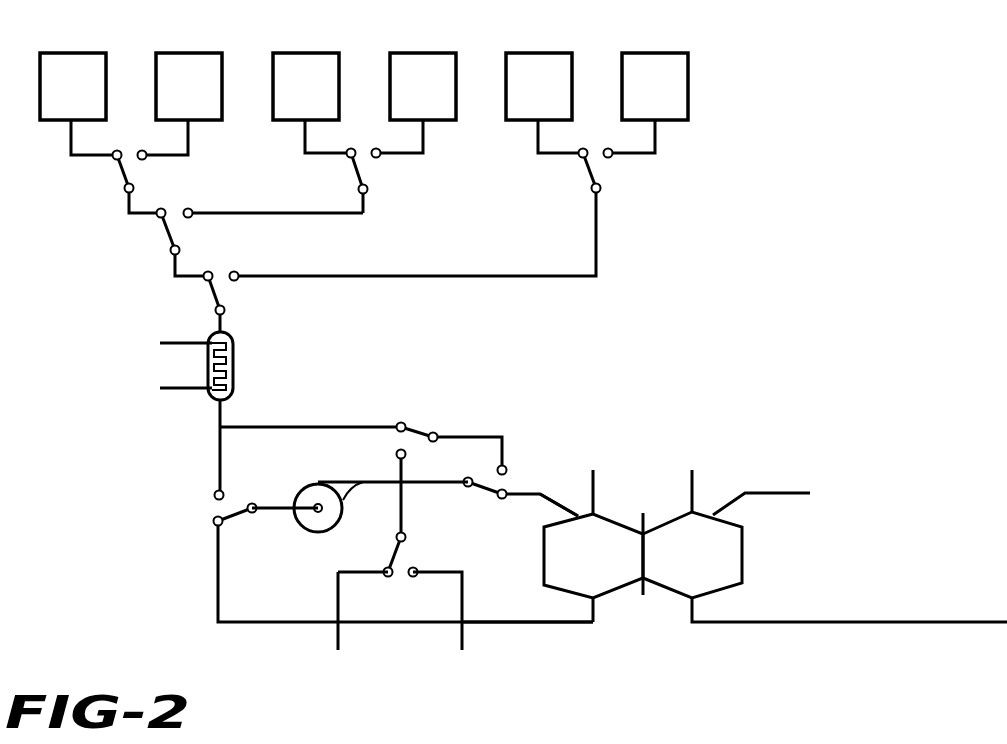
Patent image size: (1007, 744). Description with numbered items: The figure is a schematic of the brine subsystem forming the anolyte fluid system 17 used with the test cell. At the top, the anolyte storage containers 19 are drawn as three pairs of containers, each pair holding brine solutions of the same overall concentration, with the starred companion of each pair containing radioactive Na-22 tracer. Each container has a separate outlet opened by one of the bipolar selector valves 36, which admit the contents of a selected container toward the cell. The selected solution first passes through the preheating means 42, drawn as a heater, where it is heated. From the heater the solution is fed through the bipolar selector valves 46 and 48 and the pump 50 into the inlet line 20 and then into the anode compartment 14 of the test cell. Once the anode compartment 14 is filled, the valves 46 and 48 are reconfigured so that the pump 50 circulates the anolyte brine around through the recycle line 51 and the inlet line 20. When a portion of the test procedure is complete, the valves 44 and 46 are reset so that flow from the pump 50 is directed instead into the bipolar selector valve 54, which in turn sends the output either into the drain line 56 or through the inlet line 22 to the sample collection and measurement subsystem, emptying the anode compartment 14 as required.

The anolyte fluid system 17 is at (498, 38).
The anolyte storage containers 19 is at (195, 53).
The bipolar selector valves 36 is at (118, 180).
The preheating means 42 is at (236, 342).
The valve 44 is at (412, 428).
The bipolar selector valve 46 is at (510, 477).
The bipolar selector valve 48 is at (213, 508).
The pump 50 is at (318, 482).
The bipolar selector valve 54 is at (408, 556).
The drain line 56 is at (337, 593).
The inlet supply line 22 is at (462, 592).
The inlet supply line 20 is at (553, 500).
The anode compartment 14 is at (610, 518).
The recycle line 51 is at (557, 627).